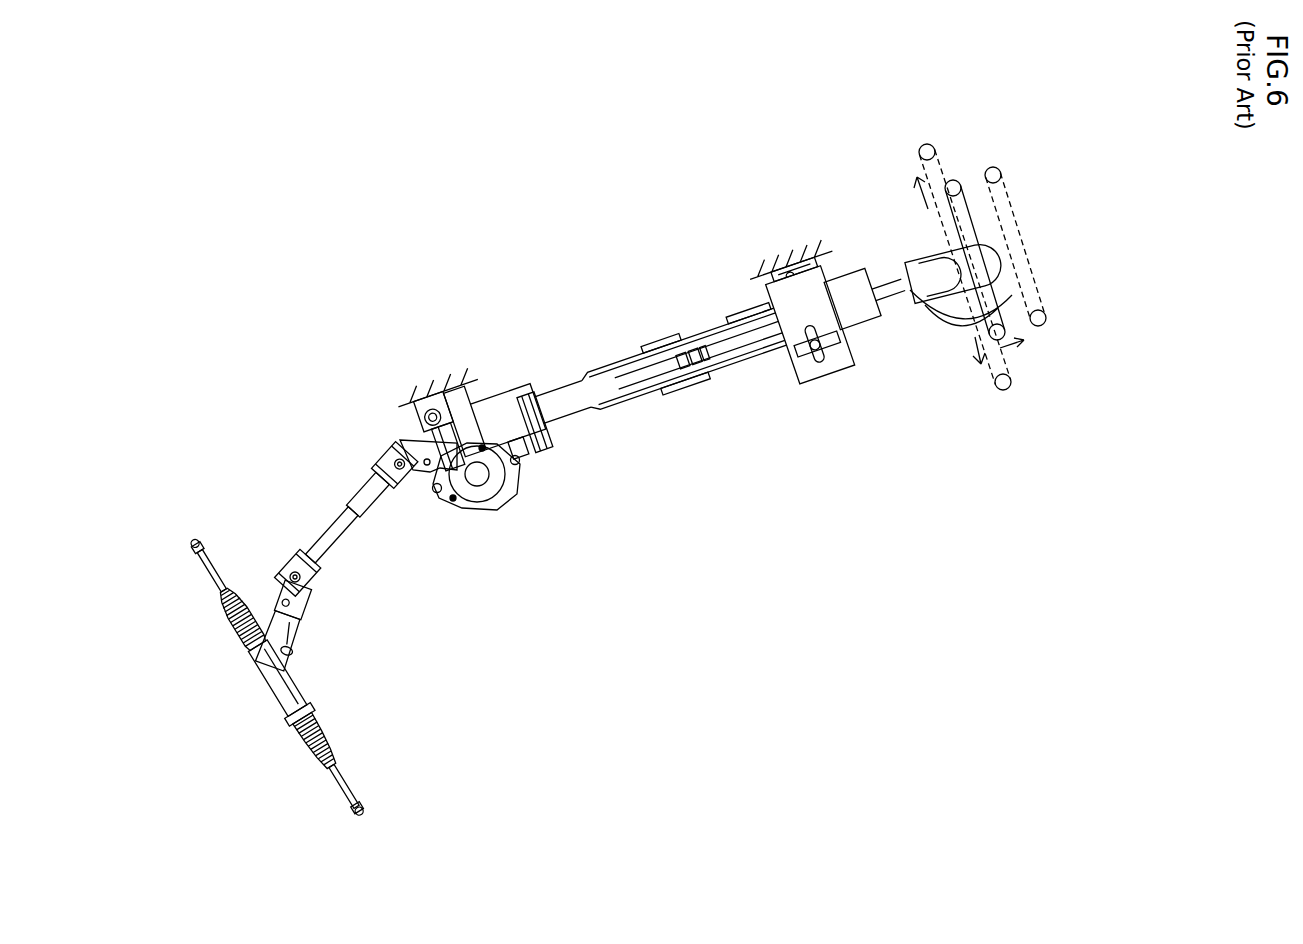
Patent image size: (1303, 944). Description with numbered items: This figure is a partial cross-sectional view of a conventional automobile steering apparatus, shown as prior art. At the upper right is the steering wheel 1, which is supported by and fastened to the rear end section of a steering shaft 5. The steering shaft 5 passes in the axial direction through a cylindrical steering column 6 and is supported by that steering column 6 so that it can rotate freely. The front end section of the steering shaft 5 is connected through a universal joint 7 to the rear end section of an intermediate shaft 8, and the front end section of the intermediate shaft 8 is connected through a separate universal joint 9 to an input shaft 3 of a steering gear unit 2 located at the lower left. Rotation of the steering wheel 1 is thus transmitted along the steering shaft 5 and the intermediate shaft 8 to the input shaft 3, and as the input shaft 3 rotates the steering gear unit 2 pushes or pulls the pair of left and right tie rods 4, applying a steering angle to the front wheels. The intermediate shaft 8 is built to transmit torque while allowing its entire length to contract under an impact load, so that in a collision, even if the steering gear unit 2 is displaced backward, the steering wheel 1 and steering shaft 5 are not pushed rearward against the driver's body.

The steering wheel 1 is at (1023, 235).
The steering gear unit 2 is at (261, 650).
The input shaft 3 is at (276, 598).
The tie rods 4 is at (198, 567).
The steering shaft 5 is at (888, 287).
The steering column 6 is at (858, 318).
The universal joint 7 is at (397, 448).
The intermediate shaft 8 is at (377, 494).
The universal joint 9 is at (294, 558).